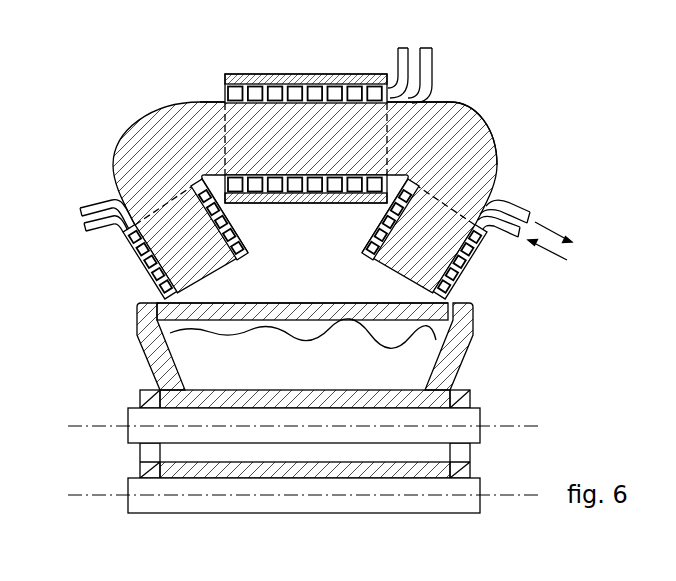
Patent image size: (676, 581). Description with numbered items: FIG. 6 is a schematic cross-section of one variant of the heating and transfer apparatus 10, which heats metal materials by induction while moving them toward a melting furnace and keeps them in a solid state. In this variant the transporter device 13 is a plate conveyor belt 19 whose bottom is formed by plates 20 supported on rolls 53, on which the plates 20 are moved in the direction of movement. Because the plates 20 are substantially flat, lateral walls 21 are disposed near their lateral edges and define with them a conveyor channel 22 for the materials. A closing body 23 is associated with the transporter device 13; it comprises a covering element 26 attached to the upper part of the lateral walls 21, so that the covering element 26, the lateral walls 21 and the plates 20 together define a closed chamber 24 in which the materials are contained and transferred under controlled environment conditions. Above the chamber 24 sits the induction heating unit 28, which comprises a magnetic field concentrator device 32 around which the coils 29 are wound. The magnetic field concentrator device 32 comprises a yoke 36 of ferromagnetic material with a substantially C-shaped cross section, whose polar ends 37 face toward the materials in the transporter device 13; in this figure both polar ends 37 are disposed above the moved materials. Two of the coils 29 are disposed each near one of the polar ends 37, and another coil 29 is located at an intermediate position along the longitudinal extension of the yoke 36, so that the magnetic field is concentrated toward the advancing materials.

The heating and transfer apparatus 10 is at (66, 100).
The transporter device 13 is at (481, 391).
The plate conveyor belt 19 is at (152, 389).
The plates 20 is at (168, 400).
The lateral walls 21 is at (153, 338).
The conveyor channel 22 is at (170, 328).
The closing body 23 is at (304, 297).
The chamber 24 is at (356, 318).
The covering element 26 is at (267, 312).
The induction heating unit 28 is at (503, 162).
The coils 29 is at (304, 70).
The magnetic field concentrator device 32 is at (196, 98).
The yoke 36 is at (472, 137).
The polar ends 37 is at (199, 228).
The rolls 53 is at (410, 502).